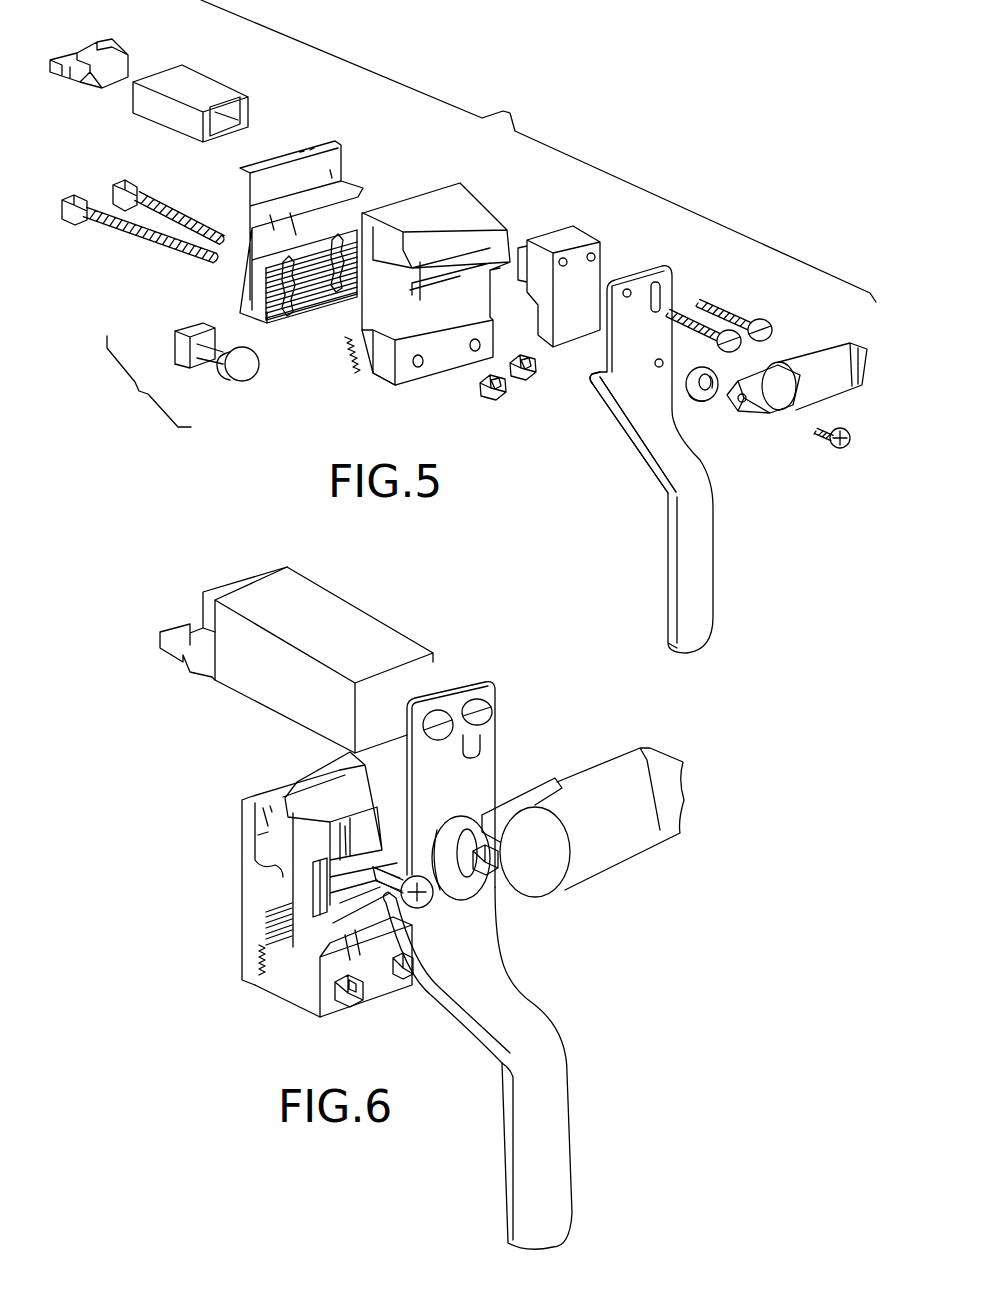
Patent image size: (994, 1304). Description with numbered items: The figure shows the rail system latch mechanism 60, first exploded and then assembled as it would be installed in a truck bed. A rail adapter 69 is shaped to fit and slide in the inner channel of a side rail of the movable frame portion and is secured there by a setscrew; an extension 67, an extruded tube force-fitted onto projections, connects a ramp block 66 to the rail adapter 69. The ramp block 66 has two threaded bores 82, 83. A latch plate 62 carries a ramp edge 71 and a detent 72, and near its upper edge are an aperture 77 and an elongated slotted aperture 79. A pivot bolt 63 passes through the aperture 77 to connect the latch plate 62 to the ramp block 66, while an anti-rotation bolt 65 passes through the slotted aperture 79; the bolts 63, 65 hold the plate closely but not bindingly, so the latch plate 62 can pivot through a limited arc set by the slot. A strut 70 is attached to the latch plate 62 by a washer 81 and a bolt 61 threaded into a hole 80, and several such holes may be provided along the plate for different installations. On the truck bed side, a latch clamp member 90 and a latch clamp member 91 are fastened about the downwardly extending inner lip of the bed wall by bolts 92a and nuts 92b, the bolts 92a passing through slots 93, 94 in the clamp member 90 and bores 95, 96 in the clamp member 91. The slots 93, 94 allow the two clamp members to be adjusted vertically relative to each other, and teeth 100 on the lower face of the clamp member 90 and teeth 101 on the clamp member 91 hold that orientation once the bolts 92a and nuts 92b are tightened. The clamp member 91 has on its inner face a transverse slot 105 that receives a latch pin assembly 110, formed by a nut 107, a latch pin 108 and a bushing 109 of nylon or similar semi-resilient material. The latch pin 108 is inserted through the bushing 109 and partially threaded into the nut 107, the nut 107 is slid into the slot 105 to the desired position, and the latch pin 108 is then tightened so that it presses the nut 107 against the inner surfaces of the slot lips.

In FIG. 6, the latch mechanism 60 is at (228, 787).
In FIG. 5, the bolt 61 is at (818, 438).
In FIG. 6, the bolt 61 is at (403, 887).
In FIG. 5, the latch plate 62 is at (683, 542).
In FIG. 6, the latch plate 62 is at (553, 1112).
In FIG. 5, the pivot bolt 63 is at (680, 303).
In FIG. 6, the pivot bolt 63 is at (435, 707).
In FIG. 5, the anti-rotation bolt 65 is at (723, 305).
In FIG. 6, the anti-rotation bolt 65 is at (491, 694).
In FIG. 5, the ramp block 66 is at (553, 232).
In FIG. 6, the ramp block 66 is at (427, 672).
In FIG. 5, the extension 67 is at (200, 72).
In FIG. 6, the extension 67 is at (320, 600).
In FIG. 5, the rail adapter 69 is at (125, 52).
In FIG. 6, the rail adapter 69 is at (245, 578).
In FIG. 5, the strut 70 is at (833, 353).
In FIG. 6, the strut 70 is at (583, 822).
In FIG. 5, the ramp edge 71 is at (609, 421).
In FIG. 6, the ramp edge 71 is at (424, 997).
In FIG. 5, the detent 72 is at (595, 376).
In FIG. 5, the aperture 77 is at (628, 289).
In FIG. 5, the slotted aperture 79 is at (661, 292).
In FIG. 6, the slotted aperture 79 is at (483, 738).
In FIG. 5, the hole 80 is at (660, 368).
In FIG. 5, the washer 81 is at (704, 393).
In FIG. 6, the washer 81 is at (461, 858).
In FIG. 5, the threaded bore 82 is at (565, 258).
In FIG. 5, the threaded bore 83 is at (593, 253).
In FIG. 5, the latch clamp member 90 is at (315, 157).
In FIG. 6, the latch clamp member 90 is at (275, 792).
In FIG. 5, the latch clamp member 91 is at (448, 200).
In FIG. 6, the latch clamp member 91 is at (333, 790).
In FIG. 5, the bolts 92a is at (80, 195).
In FIG. 5, the nuts 92b is at (522, 382).
In FIG. 6, the nuts 92b is at (393, 978).
In FIG. 5, the slot 93 is at (290, 316).
In FIG. 5, the slot 94 is at (338, 292).
In FIG. 5, the bore 95 is at (418, 367).
In FIG. 5, the bore 96 is at (474, 351).
In FIG. 5, the teeth 100 is at (268, 300).
In FIG. 6, the teeth 100 is at (267, 923).
In FIG. 5, the teeth 101 is at (347, 347).
In FIG. 6, the teeth 101 is at (260, 977).
In FIG. 6, the transverse slot 105 is at (300, 895).
In FIG. 5, the nut 107 is at (178, 346).
In FIG. 5, the latch pin 108 is at (240, 375).
In FIG. 5, the bushing 109 is at (206, 356).
In FIG. 6, the bushing 109 is at (387, 879).
In FIG. 5, the latch pin assembly 110 is at (133, 381).